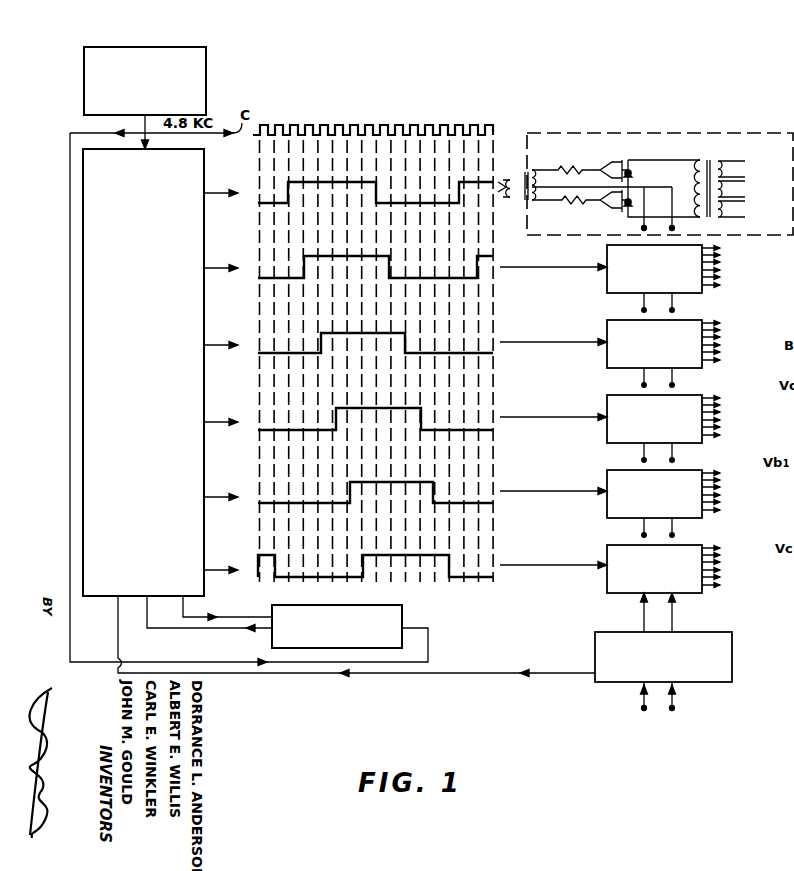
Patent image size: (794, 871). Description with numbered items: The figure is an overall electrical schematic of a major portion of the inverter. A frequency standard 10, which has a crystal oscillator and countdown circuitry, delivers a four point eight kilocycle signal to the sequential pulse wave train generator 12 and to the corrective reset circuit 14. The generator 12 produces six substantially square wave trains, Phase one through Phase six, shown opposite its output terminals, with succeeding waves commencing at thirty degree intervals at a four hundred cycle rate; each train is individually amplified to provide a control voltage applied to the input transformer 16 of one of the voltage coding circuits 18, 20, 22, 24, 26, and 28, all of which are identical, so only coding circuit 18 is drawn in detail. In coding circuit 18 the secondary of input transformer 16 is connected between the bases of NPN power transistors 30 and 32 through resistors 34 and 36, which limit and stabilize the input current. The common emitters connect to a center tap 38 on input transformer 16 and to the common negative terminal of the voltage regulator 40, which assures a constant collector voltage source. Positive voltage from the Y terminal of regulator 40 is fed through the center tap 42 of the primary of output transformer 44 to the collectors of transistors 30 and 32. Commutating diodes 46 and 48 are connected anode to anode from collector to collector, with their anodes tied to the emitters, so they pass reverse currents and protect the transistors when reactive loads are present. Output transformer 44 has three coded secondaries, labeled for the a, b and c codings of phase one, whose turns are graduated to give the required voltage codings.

The frequency standard 10 is at (207, 53).
The sequential pulse wave train generator 12 is at (152, 416).
The corrective reset circuit 14 is at (404, 610).
The input transformer 16 is at (522, 174).
The voltage coding circuit 18 is at (665, 133).
The voltage coding circuit 20 is at (643, 280).
The voltage coding circuit 22 is at (643, 355).
The voltage coding circuit 24 is at (643, 430).
The voltage coding circuit 26 is at (643, 505).
The voltage coding circuit 28 is at (643, 580).
The NPN power transistor 30 is at (652, 176).
The NPN power transistor 32 is at (604, 210).
The resistor 34 is at (580, 164).
The resistor 36 is at (566, 206).
The center tap 38 is at (602, 179).
The voltage regulator 40 is at (727, 632).
The center tap 42 is at (691, 188).
The output transformer 44 is at (722, 162).
The commutating diode 46 is at (634, 173).
The commutating diode 48 is at (624, 212).